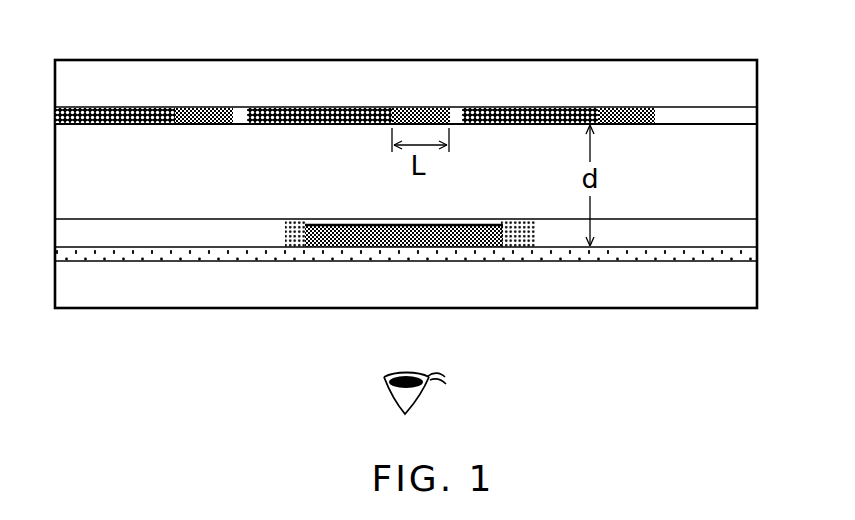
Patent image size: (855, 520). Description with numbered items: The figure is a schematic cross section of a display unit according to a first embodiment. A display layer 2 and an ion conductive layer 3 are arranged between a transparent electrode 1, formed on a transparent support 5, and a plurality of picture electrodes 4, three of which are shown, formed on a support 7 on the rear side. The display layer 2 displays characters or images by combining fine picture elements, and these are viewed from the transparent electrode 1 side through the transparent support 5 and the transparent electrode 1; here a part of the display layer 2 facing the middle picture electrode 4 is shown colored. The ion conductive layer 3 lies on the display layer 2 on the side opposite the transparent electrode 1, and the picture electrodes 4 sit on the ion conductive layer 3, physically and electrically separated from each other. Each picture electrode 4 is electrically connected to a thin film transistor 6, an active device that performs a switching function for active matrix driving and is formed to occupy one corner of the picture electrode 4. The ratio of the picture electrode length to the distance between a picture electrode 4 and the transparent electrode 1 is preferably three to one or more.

The transparent electrode 1 is at (745, 253).
The display layer 2 is at (745, 230).
The ion conductive layer 3 is at (745, 179).
The picture electrode 4 is at (420, 107).
The transparent support 5 is at (745, 290).
The thin film transistor 6 is at (316, 107).
The support 7 is at (745, 83).